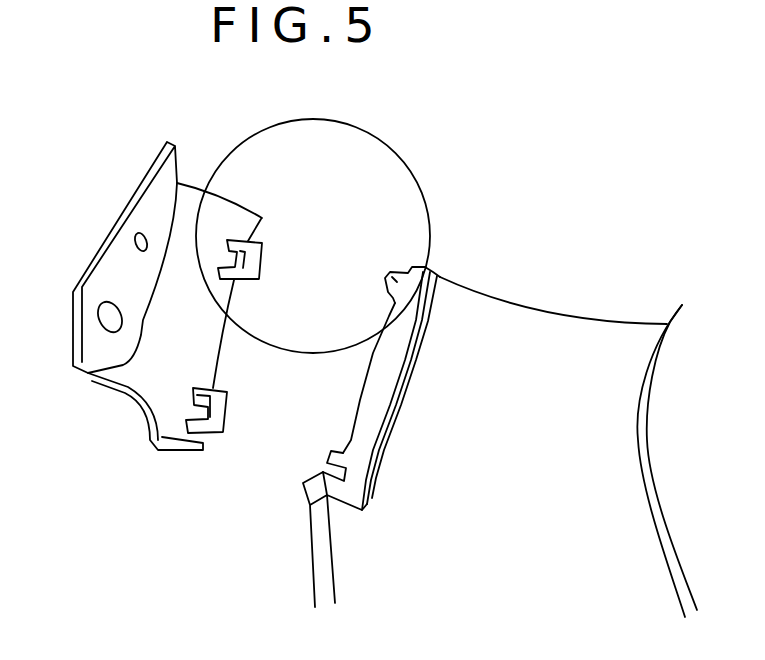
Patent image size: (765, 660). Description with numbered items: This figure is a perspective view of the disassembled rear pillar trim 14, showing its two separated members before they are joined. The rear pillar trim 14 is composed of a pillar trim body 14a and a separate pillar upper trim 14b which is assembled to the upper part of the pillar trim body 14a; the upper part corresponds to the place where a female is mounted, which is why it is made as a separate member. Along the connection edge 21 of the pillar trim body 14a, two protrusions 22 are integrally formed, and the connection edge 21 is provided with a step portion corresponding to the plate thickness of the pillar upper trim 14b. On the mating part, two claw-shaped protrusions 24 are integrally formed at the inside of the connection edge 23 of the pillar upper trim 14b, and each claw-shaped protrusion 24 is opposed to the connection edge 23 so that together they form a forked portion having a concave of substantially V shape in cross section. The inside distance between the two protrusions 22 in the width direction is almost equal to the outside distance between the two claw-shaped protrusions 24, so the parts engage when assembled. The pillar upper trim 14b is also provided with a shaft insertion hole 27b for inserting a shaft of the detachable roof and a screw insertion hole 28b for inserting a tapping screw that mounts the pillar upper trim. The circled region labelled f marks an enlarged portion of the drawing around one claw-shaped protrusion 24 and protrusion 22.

The rear pillar trim 14 is at (229, 565).
The pillar trim body 14a is at (590, 373).
The pillar upper trim 14b is at (123, 270).
The connection edge 21 is at (372, 392).
The protrusion 22 is at (390, 280).
The connection edge 23 is at (210, 337).
The claw-shaped protrusion 24 is at (248, 257).
The shaft insertion hole 27b is at (113, 308).
The screw insertion hole 28b is at (137, 237).
The enlarged portion circle f is at (427, 190).